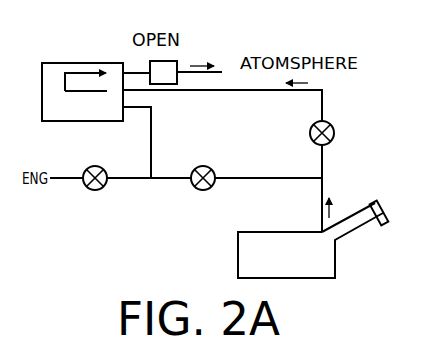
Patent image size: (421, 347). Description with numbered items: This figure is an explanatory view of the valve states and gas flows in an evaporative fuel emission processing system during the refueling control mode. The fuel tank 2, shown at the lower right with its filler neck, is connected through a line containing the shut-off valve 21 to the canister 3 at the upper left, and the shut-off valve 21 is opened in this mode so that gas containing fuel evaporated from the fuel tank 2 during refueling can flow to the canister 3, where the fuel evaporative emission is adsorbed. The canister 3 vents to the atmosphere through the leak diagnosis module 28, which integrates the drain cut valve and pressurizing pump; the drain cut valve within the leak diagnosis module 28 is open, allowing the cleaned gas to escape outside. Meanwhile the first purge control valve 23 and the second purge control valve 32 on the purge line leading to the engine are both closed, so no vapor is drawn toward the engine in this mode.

The fuel tank 2 is at (238, 257).
The canister 3 is at (80, 68).
The shut-off valve 21 is at (329, 121).
The first purge control valve 23 is at (86, 171).
The leak diagnosis module 28 is at (177, 67).
The second purge control valve 32 is at (205, 165).